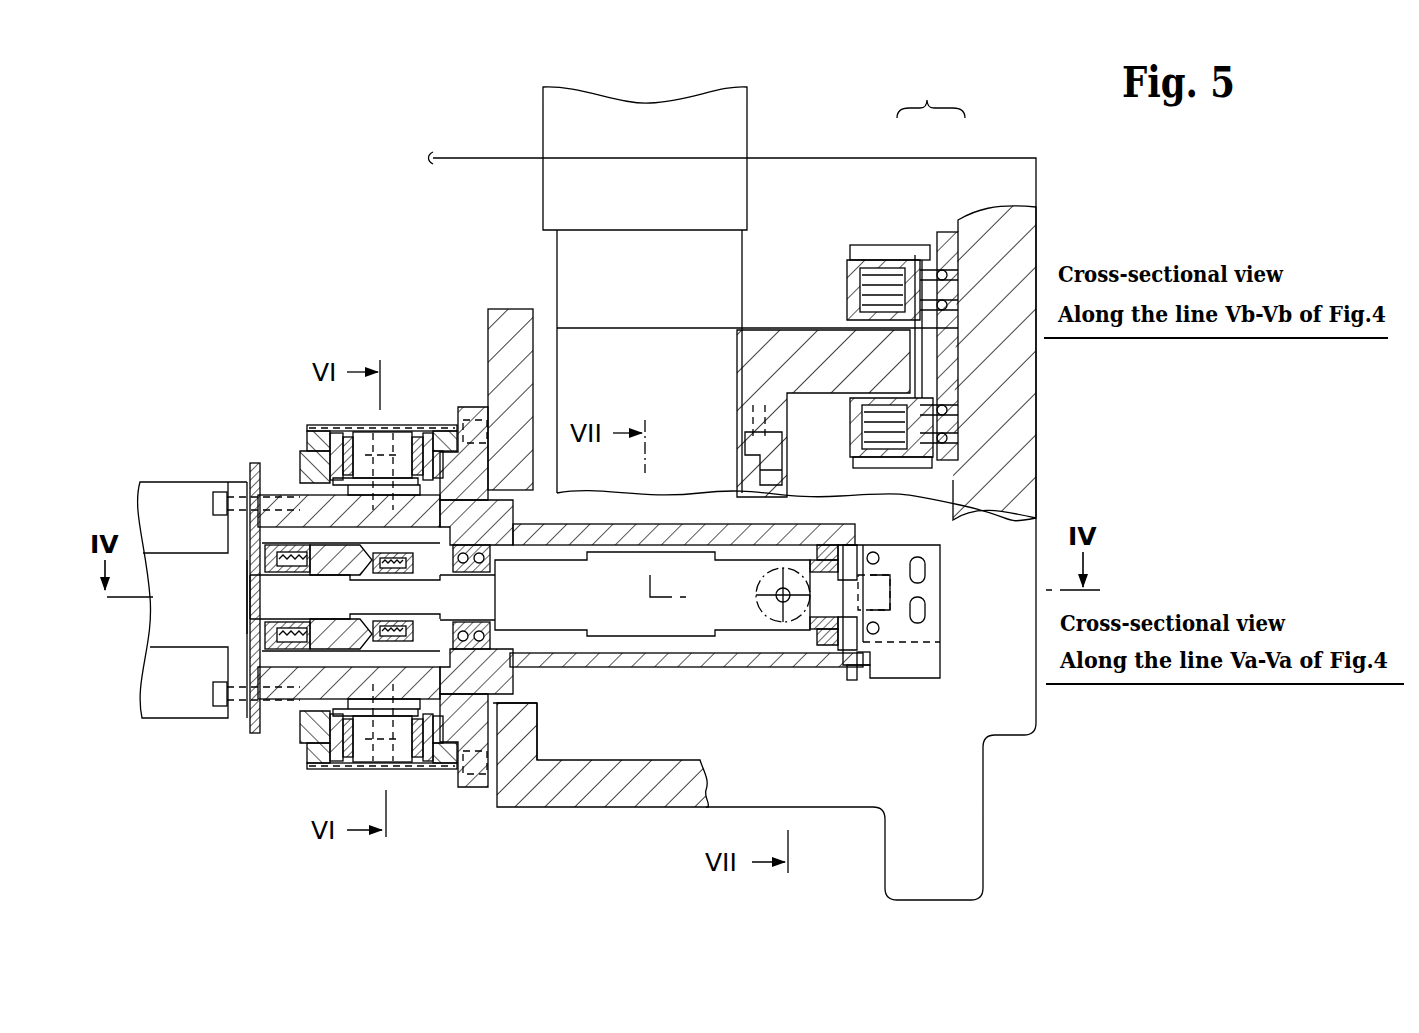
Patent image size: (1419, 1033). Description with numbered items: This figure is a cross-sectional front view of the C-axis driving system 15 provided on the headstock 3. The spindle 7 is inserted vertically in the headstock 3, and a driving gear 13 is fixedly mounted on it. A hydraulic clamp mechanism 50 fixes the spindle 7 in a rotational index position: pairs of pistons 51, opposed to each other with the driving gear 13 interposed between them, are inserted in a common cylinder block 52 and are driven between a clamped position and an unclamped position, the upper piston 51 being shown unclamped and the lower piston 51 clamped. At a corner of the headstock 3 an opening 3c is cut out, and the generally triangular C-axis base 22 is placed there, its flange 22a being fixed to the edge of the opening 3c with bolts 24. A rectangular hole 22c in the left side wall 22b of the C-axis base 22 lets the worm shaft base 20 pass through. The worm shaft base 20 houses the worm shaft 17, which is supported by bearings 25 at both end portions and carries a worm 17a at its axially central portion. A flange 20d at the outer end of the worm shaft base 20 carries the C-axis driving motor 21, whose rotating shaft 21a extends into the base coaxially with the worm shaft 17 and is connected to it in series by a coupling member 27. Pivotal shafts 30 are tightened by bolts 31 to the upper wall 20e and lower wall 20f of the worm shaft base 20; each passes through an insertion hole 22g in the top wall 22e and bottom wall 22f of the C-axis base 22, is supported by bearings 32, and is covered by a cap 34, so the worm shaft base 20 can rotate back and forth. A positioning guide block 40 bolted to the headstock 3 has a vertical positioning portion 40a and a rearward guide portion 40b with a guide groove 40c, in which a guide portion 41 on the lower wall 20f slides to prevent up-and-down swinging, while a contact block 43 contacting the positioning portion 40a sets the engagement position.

The headstock 3 is at (642, 808).
The opening 3c is at (524, 704).
The spindle 7 is at (548, 258).
The driving gear 13 is at (787, 313).
The C-axis driving system 15 is at (421, 324).
The worm shaft 17 is at (577, 640).
The worm 17a is at (667, 636).
The worm shaft base 20 is at (757, 670).
The flange 20d is at (250, 465).
The upper wall 20e is at (492, 498).
The lower wall 20f is at (500, 731).
The C-axis driving motor 21 is at (181, 480).
The rotating shaft 21a is at (248, 630).
The C-axis base 22 is at (382, 597).
The flange 22a is at (455, 405).
The left side wall 22b is at (306, 743).
The rectangular hole 22c is at (300, 470).
The top wall 22e is at (310, 431).
The bottom wall 22f is at (295, 765).
The insertion hole 22g is at (430, 515).
The bolts 24 is at (482, 435).
The bearings 25 is at (495, 657).
The coupling member 27 is at (378, 650).
The pivotal shafts 30 is at (373, 430).
The bolts 31 is at (392, 430).
The bearings 32 is at (430, 452).
The caps 34 is at (312, 429).
The positioning guide block 40 is at (924, 620).
The positioning portion 40a is at (940, 582).
The guide portion 40b is at (940, 664).
The guide groove 40c is at (868, 667).
The guide portion 41 is at (850, 680).
The contact block 43 is at (887, 575).
The hydraulic clamp mechanism 50 is at (931, 96).
The pistons 51 is at (890, 247).
The cylinder block 52 is at (938, 230).